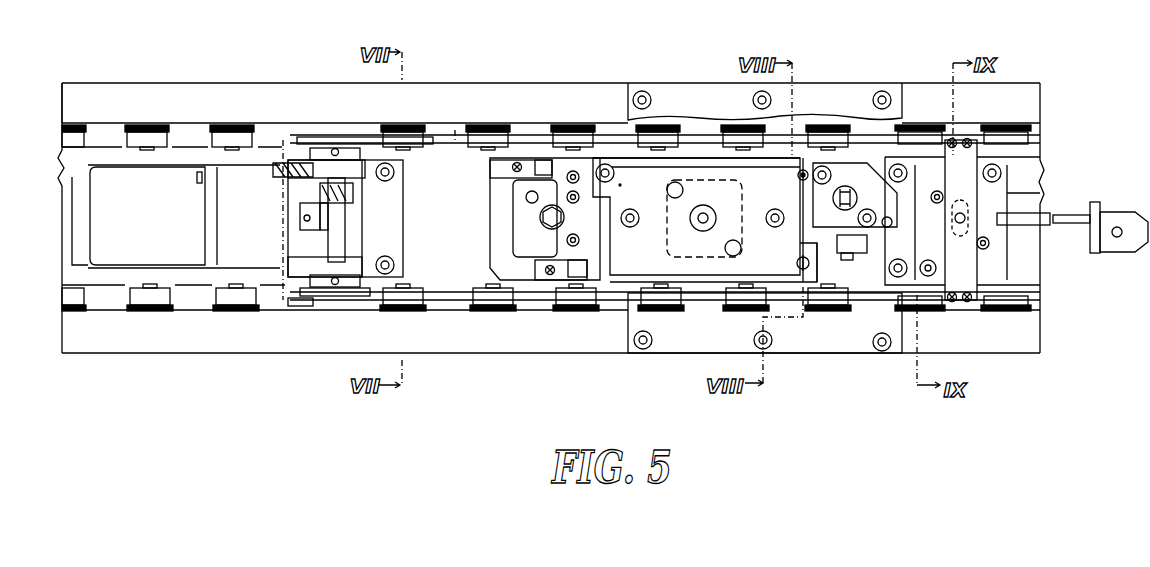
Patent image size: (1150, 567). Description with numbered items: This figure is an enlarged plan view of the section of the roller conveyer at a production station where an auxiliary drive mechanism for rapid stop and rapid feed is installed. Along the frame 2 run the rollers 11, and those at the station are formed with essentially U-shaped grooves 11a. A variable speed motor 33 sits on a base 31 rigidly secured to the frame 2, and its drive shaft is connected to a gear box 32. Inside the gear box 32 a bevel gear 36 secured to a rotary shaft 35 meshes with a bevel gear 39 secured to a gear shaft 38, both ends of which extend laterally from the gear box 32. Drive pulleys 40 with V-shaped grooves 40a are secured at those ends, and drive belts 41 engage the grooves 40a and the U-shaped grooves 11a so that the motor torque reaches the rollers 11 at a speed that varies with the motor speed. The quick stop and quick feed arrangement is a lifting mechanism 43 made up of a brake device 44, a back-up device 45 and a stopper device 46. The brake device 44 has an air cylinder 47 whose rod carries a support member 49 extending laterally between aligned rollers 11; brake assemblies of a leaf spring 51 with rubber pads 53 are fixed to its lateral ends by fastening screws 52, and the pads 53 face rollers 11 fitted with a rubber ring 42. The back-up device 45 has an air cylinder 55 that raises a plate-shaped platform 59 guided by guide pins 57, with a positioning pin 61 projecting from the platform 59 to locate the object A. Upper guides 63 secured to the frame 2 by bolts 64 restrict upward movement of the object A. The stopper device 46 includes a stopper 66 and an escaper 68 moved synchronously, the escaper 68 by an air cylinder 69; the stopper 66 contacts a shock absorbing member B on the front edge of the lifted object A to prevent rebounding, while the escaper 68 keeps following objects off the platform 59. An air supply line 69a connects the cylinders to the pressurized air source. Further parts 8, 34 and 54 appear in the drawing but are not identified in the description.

The frame 2 is at (562, 75).
The roller 8 is at (185, 122).
The rollers 11 is at (128, 143).
The U-shaped grooves 11a is at (412, 300).
The base 31 is at (102, 137).
The gear box 32 is at (378, 236).
The variable speed motor 33 is at (132, 270).
The bolt 34 is at (395, 173).
The rotary shaft 35 is at (298, 223).
The bevel gear 36 is at (318, 232).
The gear shaft 38 is at (345, 218).
The bevel gear 39 is at (353, 198).
The drive pulleys 40 is at (353, 137).
The V-shaped grooves 40a is at (355, 300).
The drive belts 41 is at (437, 136).
The rubber ring 42 is at (332, 218).
The lifting mechanism 43 is at (1070, 243).
The brake device 44 is at (1021, 201).
The back-up device 45 is at (712, 218).
The stopper device 46 is at (532, 158).
The air cylinder 47 is at (963, 180).
The support member 49 is at (995, 195).
The leaf spring 51 is at (970, 138).
The fastening screws 52 is at (958, 140).
The rubber pads 53 is at (990, 170).
The roller 54 is at (917, 130).
The air cylinder 55 is at (722, 257).
The guide pins 57 is at (513, 232).
The platform 59 is at (703, 172).
The positioning pin 61 is at (606, 164).
The upper guides 63 is at (820, 90).
The bolts 64 is at (882, 92).
The stopper 66 is at (540, 218).
The escaper 68 is at (855, 186).
The air cylinder 69 is at (868, 232).
The air supply line 69a is at (1087, 214).
The object A is at (456, 128).
The shock absorbing member B is at (272, 210).